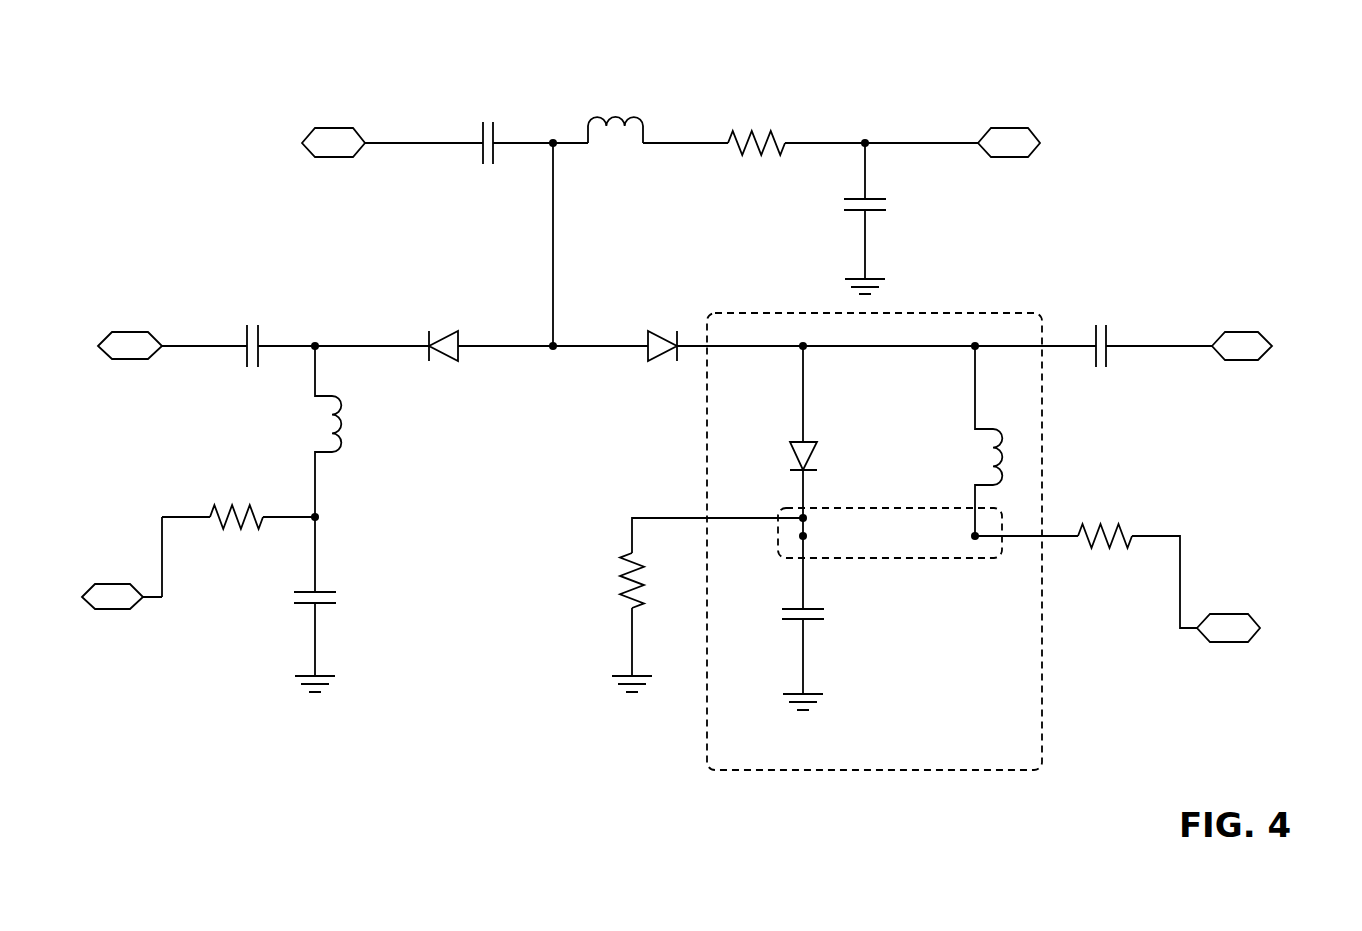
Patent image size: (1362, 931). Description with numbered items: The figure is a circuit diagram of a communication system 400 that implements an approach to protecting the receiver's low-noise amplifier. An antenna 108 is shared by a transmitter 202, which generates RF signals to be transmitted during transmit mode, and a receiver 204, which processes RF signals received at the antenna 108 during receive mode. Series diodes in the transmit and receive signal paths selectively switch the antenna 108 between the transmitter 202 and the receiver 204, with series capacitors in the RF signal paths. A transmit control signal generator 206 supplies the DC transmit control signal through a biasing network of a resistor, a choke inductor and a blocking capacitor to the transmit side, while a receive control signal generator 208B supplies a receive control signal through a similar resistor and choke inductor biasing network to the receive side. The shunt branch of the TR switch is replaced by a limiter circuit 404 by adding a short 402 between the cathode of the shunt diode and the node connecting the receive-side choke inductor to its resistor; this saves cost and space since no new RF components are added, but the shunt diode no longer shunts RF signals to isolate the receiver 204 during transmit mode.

The communication system 400 is at (120, 78).
The antenna 108 is at (315, 158).
The transmitter 202 is at (123, 359).
The receiver 204 is at (1237, 360).
The transmit control signal generator 206 is at (118, 609).
The receive control signal generator 208B is at (1233, 642).
The short 402 is at (900, 560).
The limiter circuit 404 is at (797, 313).